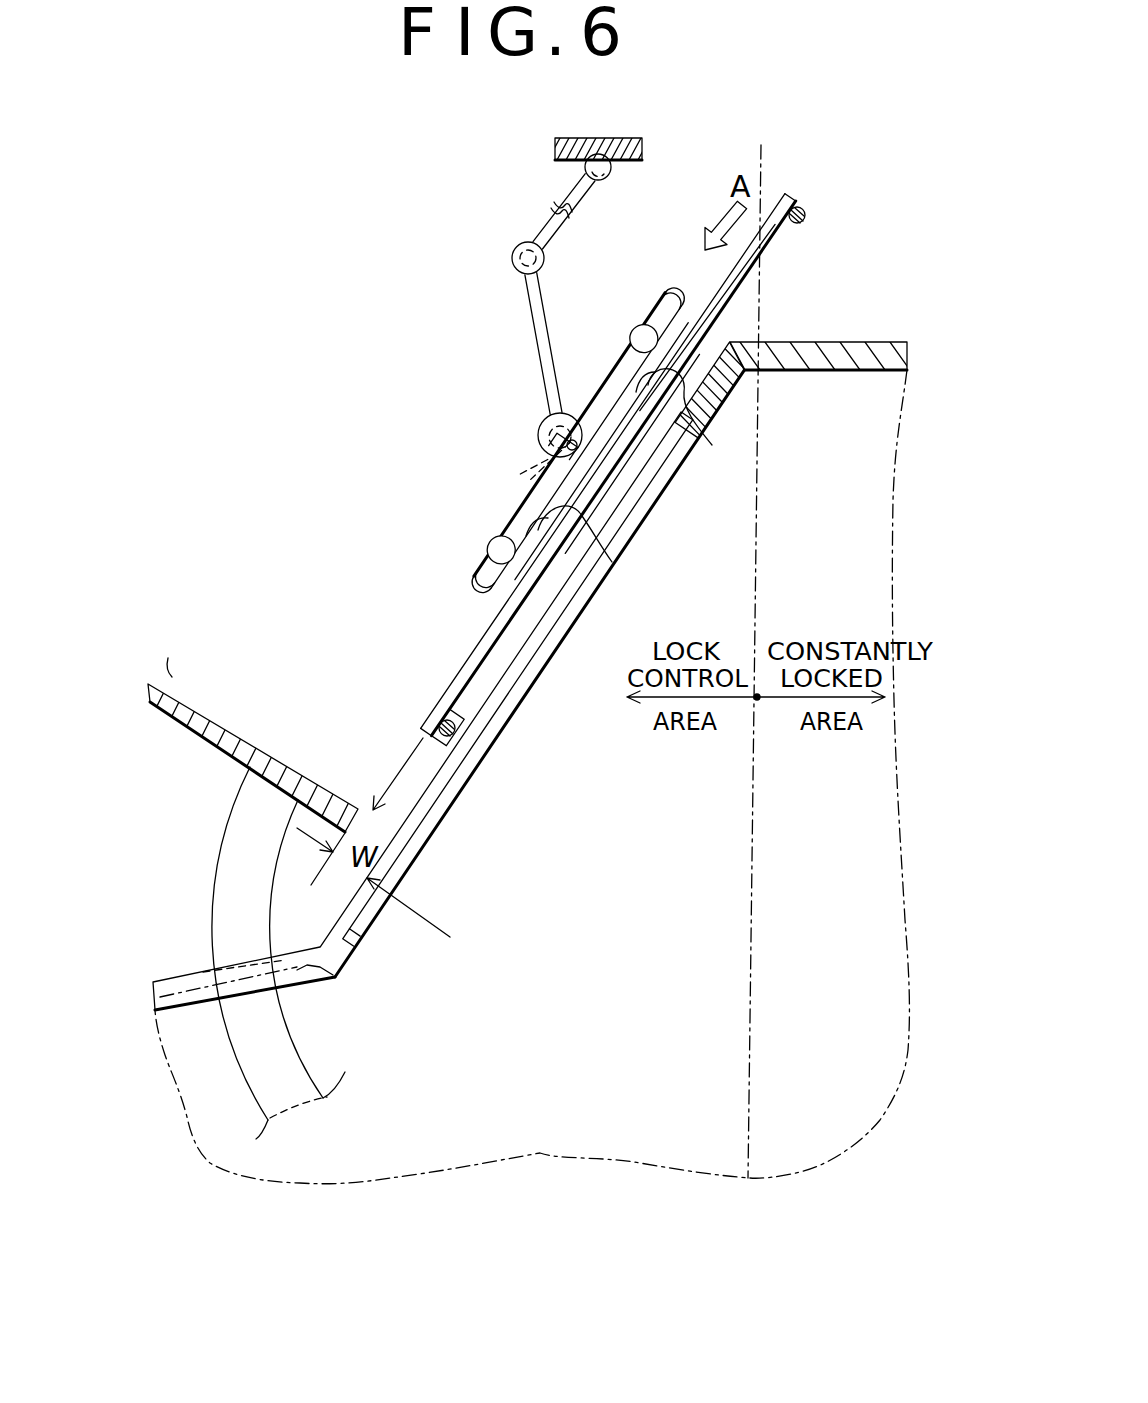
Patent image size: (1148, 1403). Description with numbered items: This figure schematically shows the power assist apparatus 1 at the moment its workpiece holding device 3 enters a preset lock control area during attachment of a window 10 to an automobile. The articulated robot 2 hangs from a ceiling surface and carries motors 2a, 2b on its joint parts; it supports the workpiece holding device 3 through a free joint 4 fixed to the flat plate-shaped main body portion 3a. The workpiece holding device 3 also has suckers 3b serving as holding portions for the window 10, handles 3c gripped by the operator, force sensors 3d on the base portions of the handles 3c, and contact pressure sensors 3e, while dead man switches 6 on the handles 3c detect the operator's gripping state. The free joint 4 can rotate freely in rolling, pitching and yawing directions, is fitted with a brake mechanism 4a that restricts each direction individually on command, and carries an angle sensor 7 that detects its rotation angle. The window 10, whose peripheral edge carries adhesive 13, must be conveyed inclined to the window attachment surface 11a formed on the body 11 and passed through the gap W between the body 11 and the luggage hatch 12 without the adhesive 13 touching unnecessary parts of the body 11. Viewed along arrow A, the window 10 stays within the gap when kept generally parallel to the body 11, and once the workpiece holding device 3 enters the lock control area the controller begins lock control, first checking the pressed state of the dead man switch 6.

The power assist apparatus 1 is at (372, 272).
The articulated robot 2 is at (526, 213).
The motor 2a is at (610, 178).
The motor 2b is at (545, 258).
The workpiece holding device 3 is at (430, 557).
The main body portion 3a is at (488, 590).
The sucker 3b is at (663, 433).
The handle 3c is at (673, 297).
The force sensor 3d is at (530, 487).
The contact pressure sensor 3e is at (633, 450).
The free joint 4 is at (528, 459).
The brake mechanism 4a is at (547, 440).
The dead man switch 6 is at (629, 331).
The angle sensor 7 is at (548, 420).
The window 10 is at (770, 250).
The body 11 is at (806, 338).
The window attachment surface 11a is at (561, 615).
The luggage hatch 12 is at (222, 716).
The adhesive 13 is at (808, 216).